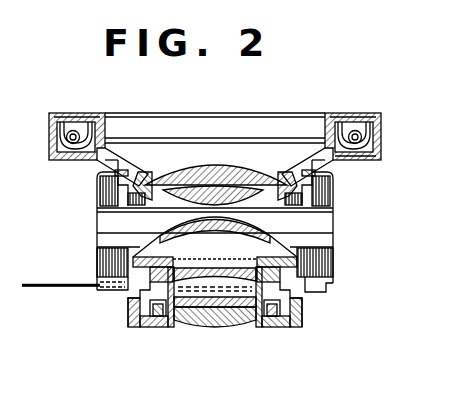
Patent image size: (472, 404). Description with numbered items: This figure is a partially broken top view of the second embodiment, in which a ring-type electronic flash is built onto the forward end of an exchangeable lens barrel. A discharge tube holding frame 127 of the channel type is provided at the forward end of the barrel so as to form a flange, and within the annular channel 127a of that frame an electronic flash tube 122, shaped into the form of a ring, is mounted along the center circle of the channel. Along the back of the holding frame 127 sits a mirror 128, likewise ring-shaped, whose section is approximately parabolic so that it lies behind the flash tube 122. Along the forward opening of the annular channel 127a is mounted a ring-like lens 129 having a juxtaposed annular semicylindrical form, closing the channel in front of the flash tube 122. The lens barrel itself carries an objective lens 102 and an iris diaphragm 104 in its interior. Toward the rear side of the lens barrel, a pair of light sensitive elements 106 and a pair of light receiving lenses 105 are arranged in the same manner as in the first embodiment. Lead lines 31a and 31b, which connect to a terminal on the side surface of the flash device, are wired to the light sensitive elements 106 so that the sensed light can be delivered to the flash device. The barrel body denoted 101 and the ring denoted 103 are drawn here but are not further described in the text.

The electronic flash tube 122 is at (381, 126).
The ring-like lens 129 is at (360, 113).
The discharge tube holding frame 127 is at (380, 134).
The annular channel 127a is at (372, 152).
The mirror 128 is at (354, 158).
The lens barrel 101 is at (339, 200).
The knurled ring 103 is at (335, 268).
The iris diaphragm 104 is at (240, 255).
The light sensitive element 106 is at (130, 300).
The light receiving lens 105 is at (149, 330).
The objective lens 102 is at (215, 328).
The lead line 31a is at (42, 282).
The lead line 31b is at (42, 290).